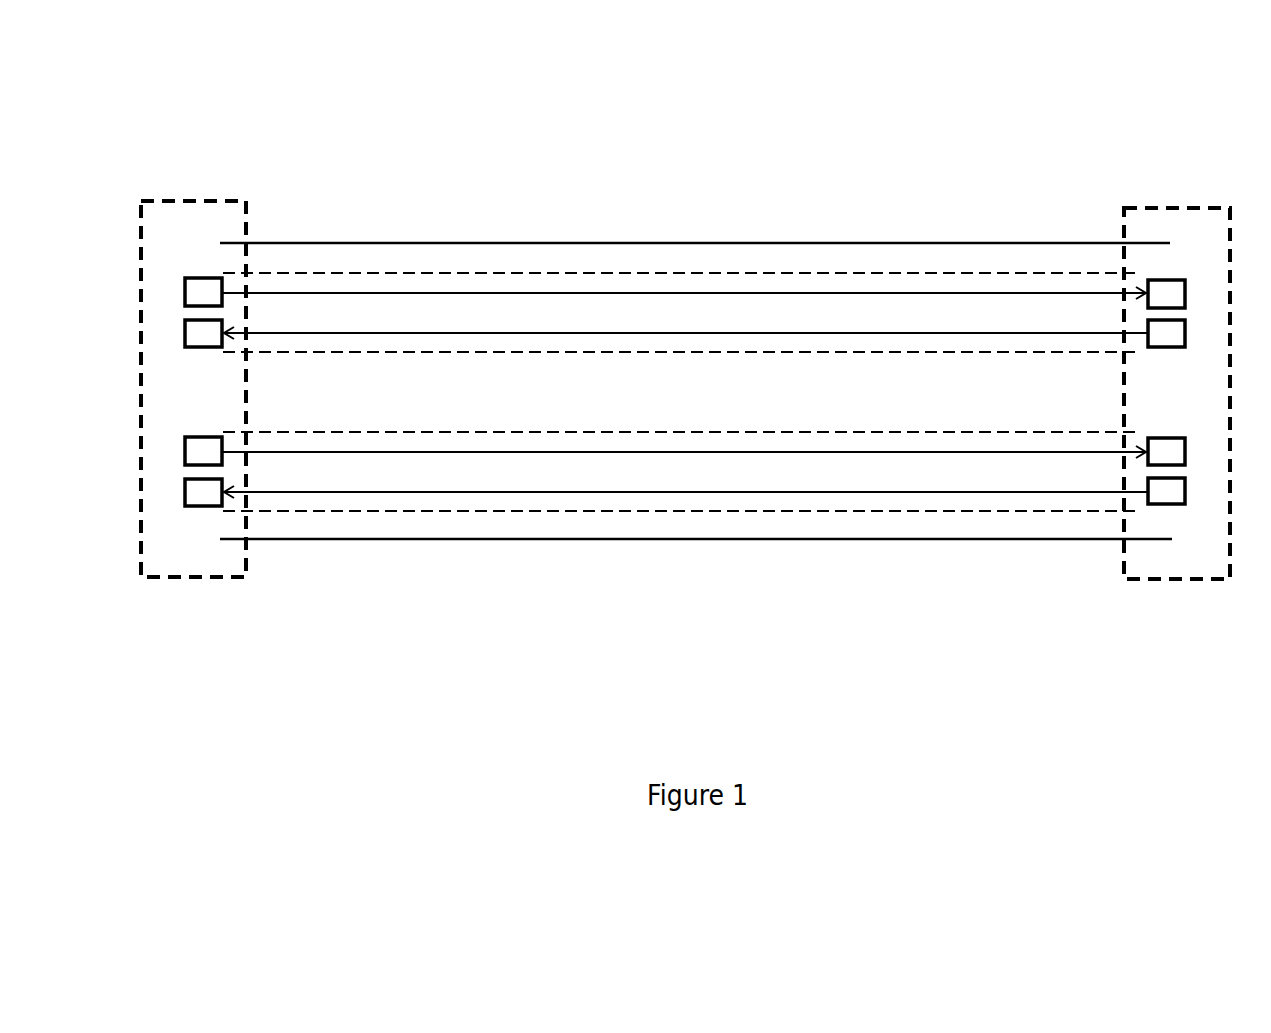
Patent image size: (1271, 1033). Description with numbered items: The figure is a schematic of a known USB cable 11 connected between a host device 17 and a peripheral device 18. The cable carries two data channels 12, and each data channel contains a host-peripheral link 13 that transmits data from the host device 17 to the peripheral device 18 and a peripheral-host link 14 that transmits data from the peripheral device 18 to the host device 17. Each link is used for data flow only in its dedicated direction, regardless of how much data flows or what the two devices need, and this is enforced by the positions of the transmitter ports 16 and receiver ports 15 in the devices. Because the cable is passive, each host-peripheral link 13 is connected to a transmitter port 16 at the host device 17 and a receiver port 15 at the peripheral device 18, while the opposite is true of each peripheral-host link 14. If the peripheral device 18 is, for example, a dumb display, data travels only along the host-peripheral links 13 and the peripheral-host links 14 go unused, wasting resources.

The USB cable 11 is at (718, 243).
The data channels 12 is at (462, 432).
The host-peripheral link 13 is at (823, 452).
The peripheral-host link 14 is at (752, 333).
The receiver port 15 is at (205, 347).
The transmitter port 16 is at (1165, 347).
The host device 17 is at (247, 202).
The peripheral device 18 is at (1122, 207).